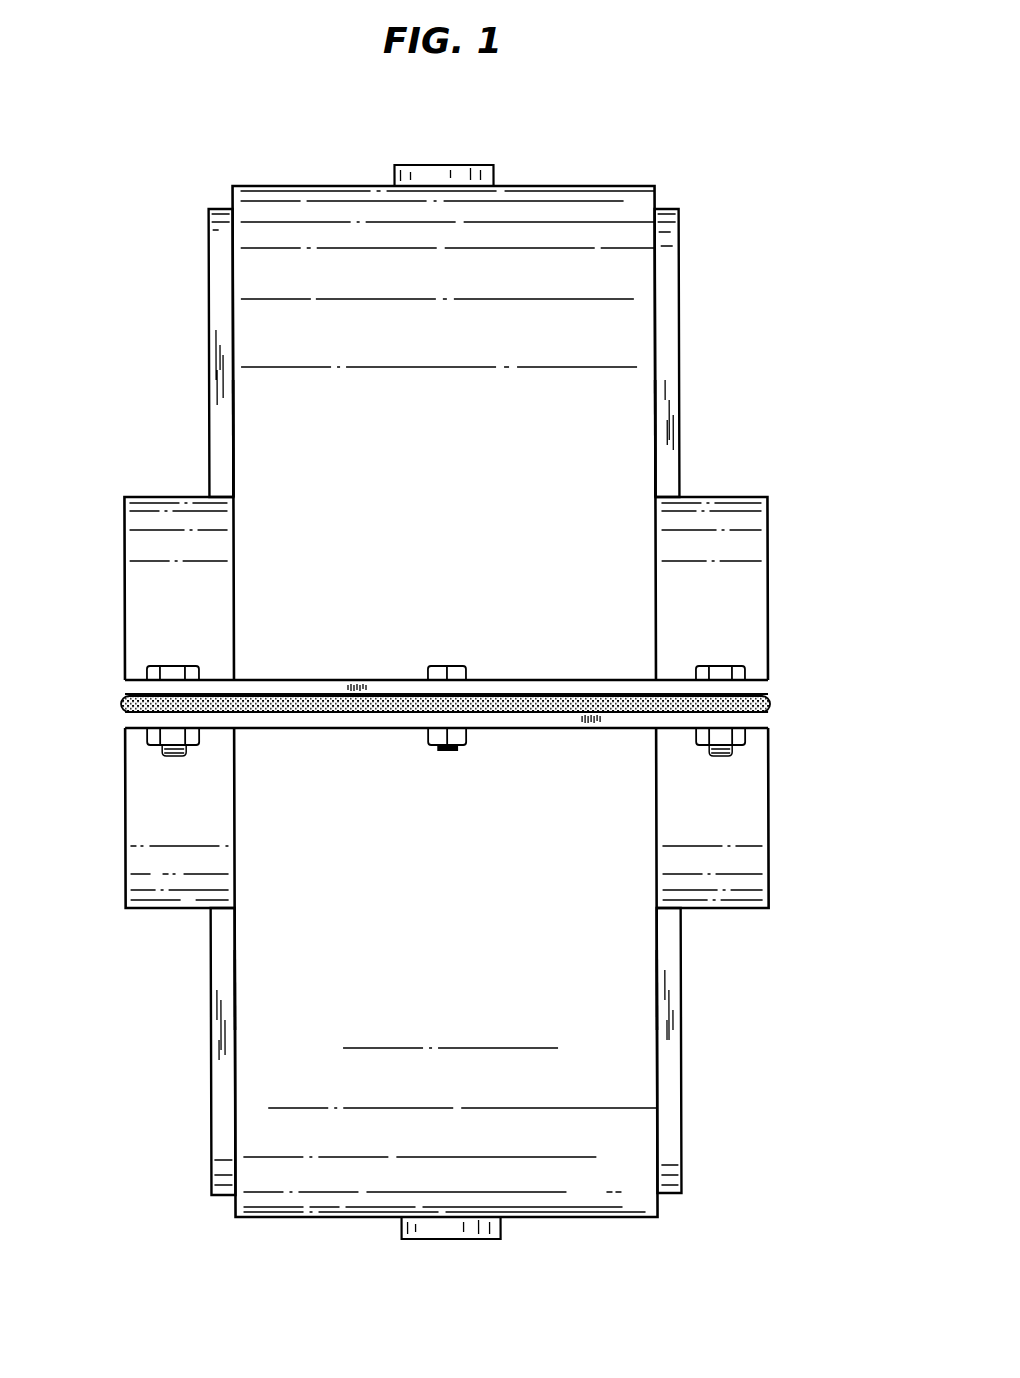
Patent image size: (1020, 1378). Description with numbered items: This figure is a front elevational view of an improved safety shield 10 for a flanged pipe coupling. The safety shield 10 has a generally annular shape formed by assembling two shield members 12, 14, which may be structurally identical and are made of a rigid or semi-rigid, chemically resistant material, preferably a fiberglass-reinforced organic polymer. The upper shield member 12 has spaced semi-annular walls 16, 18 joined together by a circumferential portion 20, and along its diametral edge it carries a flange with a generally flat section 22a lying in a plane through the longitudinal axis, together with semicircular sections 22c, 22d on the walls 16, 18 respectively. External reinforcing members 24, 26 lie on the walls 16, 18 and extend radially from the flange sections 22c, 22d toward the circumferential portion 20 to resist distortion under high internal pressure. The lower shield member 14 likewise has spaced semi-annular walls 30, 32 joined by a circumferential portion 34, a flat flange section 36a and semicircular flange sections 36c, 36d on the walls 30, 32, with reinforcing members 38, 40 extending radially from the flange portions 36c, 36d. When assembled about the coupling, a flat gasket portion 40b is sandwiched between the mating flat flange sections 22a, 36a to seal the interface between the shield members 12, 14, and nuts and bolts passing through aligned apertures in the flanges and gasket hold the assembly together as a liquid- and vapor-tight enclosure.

The safety shield 10 is at (622, 126).
The shield member 12 is at (637, 368).
The shield member 14 is at (640, 1067).
The semi-annular wall 16 is at (233, 453).
The semi-annular wall 18 is at (655, 453).
The circumferential portion 20 is at (318, 208).
The flange section 22a is at (297, 680).
The flange section 22c is at (122, 572).
The flange section 22d is at (767, 556).
The reinforcing member 24 is at (210, 344).
The reinforcing member 26 is at (678, 299).
The semi-annular wall 30 is at (235, 990).
The semi-annular wall 32 is at (657, 997).
The circumferential portion 34 is at (537, 1208).
The flange section 36a is at (283, 730).
The flange section 36c is at (122, 818).
The flange section 36d is at (767, 858).
The reinforcing member 38 is at (212, 1060).
The reinforcing member 40 is at (682, 1155).
The flat gasket portion 40b is at (770, 702).